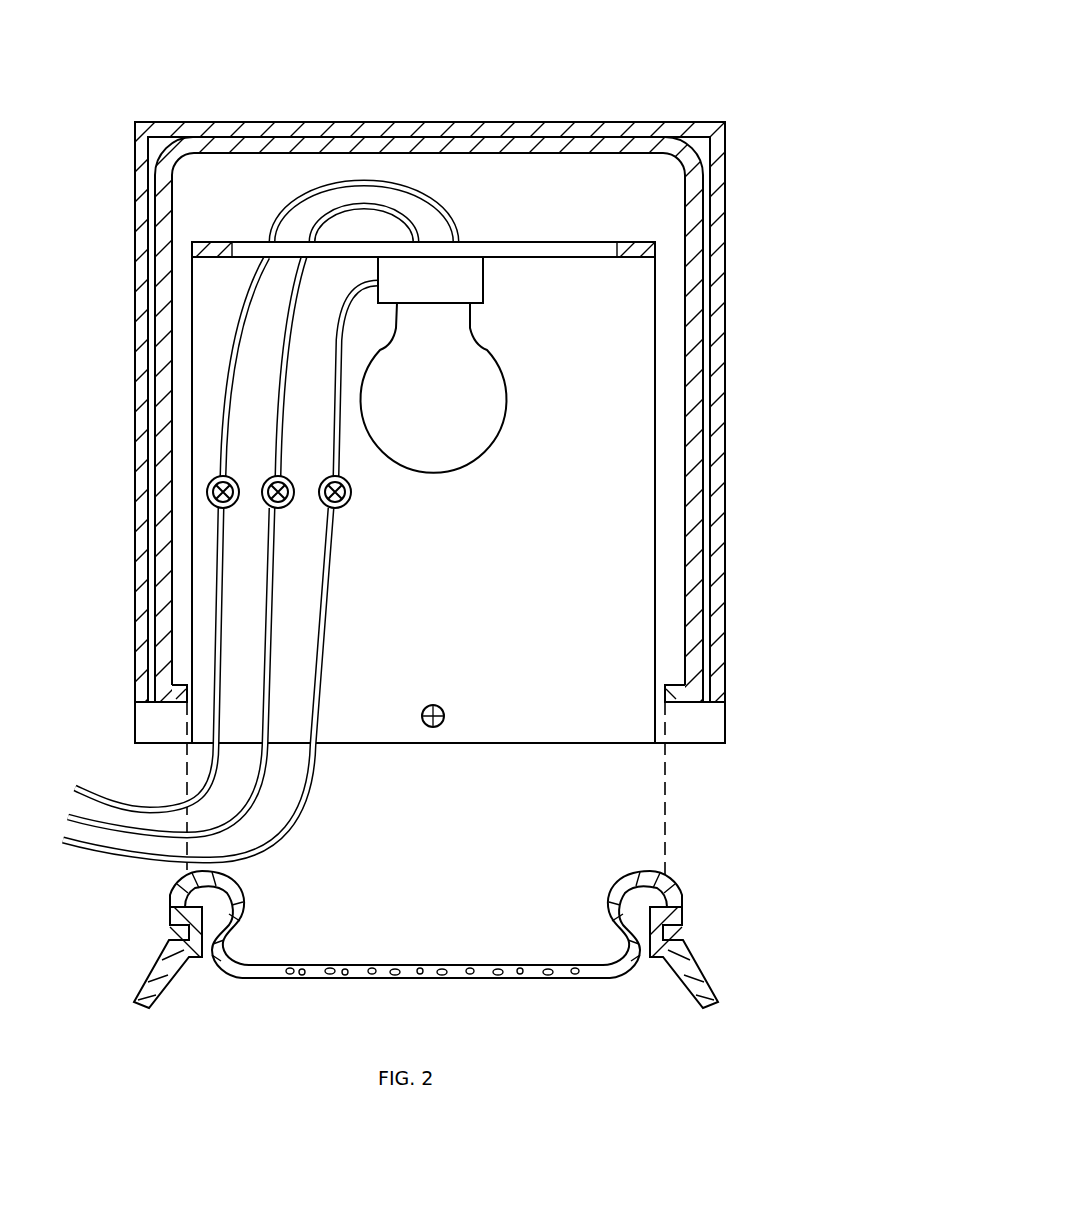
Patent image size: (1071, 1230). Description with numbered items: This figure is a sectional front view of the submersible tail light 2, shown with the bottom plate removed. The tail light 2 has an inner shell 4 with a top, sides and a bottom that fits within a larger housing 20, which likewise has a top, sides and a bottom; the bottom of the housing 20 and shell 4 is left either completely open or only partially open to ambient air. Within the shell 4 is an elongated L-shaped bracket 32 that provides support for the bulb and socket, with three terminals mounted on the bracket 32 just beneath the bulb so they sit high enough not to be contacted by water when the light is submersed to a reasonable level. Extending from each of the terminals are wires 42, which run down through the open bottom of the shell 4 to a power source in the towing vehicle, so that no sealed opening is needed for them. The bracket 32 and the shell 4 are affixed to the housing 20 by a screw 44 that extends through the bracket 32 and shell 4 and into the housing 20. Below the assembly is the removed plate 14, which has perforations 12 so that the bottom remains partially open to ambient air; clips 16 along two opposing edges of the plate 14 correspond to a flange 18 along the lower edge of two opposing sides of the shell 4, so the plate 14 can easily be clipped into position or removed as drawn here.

The submersible tail light 2 is at (676, 85).
The inner shell 4 is at (566, 142).
The housing 20 is at (458, 130).
The flange 18 is at (184, 696).
The wires 42 is at (223, 588).
The L-shaped bracket 32 is at (615, 593).
The screw 44 is at (435, 728).
The clips 16 is at (678, 898).
The perforations 12 is at (350, 968).
The plate 14 is at (322, 980).